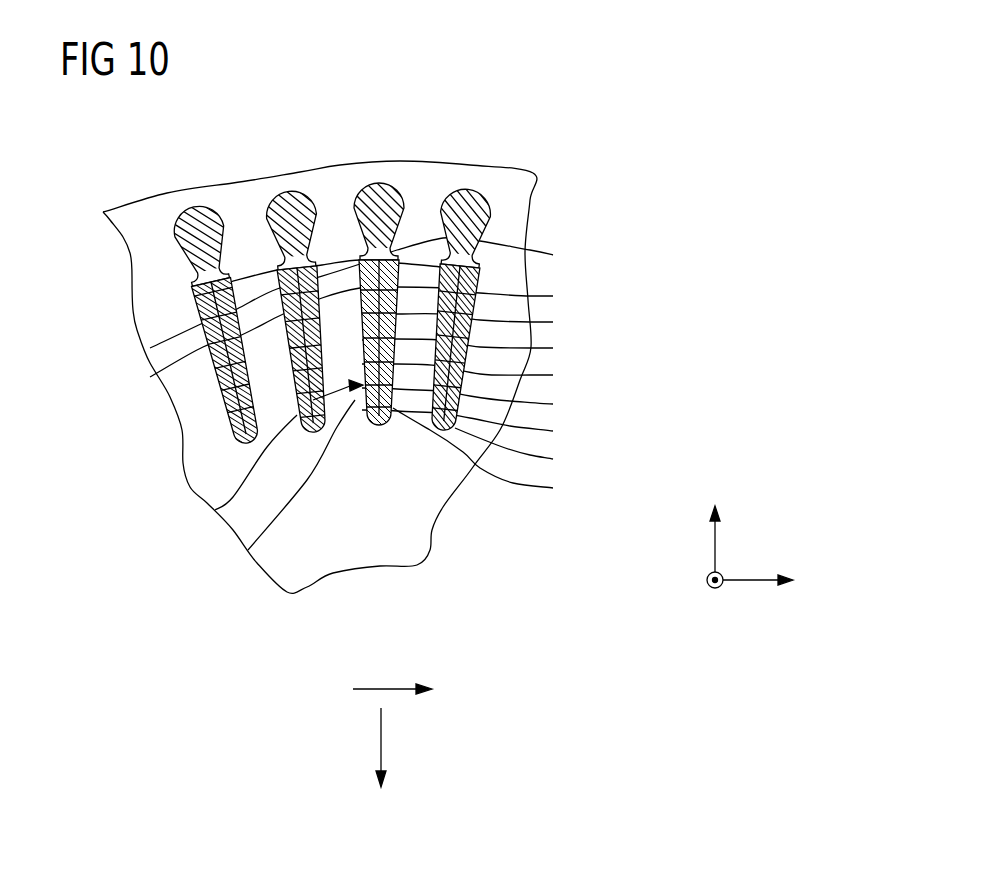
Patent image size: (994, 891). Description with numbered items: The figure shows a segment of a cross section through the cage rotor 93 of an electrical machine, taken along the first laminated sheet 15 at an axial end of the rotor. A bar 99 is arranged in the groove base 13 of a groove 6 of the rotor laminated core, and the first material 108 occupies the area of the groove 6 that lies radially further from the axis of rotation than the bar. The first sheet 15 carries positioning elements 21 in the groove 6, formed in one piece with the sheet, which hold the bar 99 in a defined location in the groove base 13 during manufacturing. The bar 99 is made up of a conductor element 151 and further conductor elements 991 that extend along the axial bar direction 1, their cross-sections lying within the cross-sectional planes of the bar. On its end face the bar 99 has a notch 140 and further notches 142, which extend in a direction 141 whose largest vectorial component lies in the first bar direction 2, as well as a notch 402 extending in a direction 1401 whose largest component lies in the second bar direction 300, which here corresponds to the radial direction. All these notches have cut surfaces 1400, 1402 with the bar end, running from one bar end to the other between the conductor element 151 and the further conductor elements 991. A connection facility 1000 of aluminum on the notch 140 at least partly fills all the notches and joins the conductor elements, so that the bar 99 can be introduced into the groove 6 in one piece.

The cage rotor 93 is at (328, 319).
The first material 108 is at (385, 195).
The notch 402 is at (355, 192).
The groove 6 is at (402, 250).
The positioning elements 21 is at (400, 252).
The cut surface 1400 is at (548, 255).
The notch 140 is at (548, 296).
The further notches 142 is at (481, 405).
The cut surface 1402 is at (548, 375).
The conductor element 151 is at (150, 348).
The further conductor elements 991 is at (150, 377).
The bar 99 is at (215, 510).
The connection facility 1000 is at (248, 550).
The groove base 13 is at (378, 432).
The first laminated sheet 15 is at (413, 517).
The second bar direction 300 is at (712, 581).
The axial bar direction 1 is at (708, 582).
The first bar direction 2 is at (747, 580).
The direction 141 is at (382, 688).
The direction 1401 is at (382, 737).